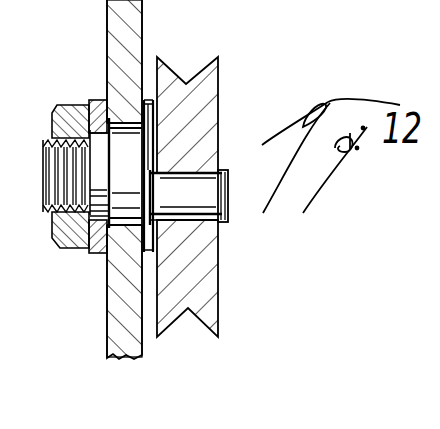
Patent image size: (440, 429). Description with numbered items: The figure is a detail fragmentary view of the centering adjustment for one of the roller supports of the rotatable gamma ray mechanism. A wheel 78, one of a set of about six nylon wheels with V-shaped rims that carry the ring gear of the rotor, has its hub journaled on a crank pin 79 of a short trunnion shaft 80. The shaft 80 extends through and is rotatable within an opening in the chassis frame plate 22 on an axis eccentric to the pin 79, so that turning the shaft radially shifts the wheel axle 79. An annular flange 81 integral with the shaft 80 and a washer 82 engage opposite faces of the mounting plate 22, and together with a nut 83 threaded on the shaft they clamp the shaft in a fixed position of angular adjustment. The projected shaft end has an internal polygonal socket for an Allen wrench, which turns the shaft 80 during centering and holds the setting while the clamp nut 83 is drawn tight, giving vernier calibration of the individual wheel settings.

The chassis frame plate 22 is at (130, 343).
The wheel 78 is at (197, 278).
The crank pin 79 is at (192, 205).
The trunnion shaft 80 is at (132, 179).
The annular flange 81 is at (147, 100).
The washer 82 is at (95, 100).
The nut 83 is at (53, 108).